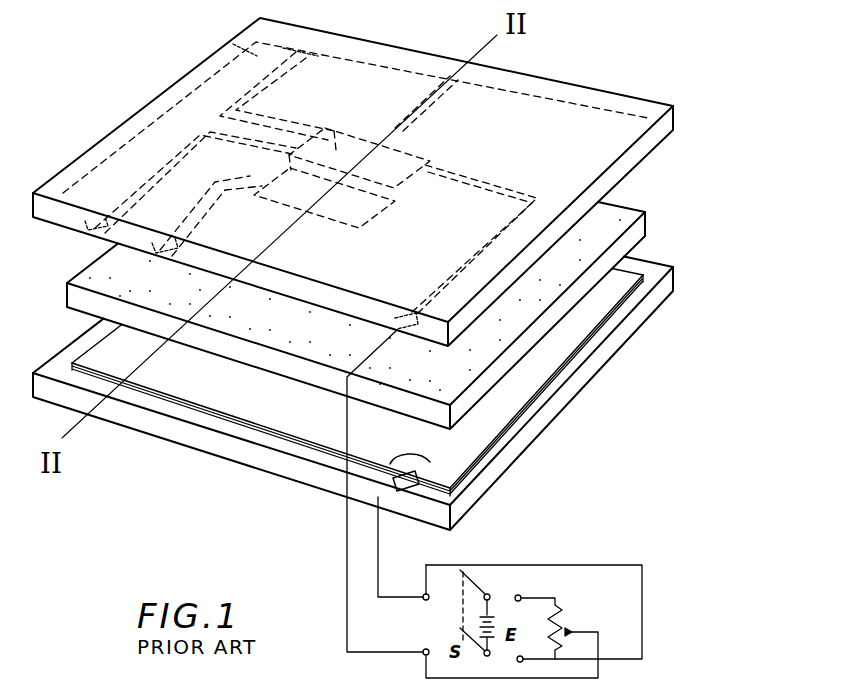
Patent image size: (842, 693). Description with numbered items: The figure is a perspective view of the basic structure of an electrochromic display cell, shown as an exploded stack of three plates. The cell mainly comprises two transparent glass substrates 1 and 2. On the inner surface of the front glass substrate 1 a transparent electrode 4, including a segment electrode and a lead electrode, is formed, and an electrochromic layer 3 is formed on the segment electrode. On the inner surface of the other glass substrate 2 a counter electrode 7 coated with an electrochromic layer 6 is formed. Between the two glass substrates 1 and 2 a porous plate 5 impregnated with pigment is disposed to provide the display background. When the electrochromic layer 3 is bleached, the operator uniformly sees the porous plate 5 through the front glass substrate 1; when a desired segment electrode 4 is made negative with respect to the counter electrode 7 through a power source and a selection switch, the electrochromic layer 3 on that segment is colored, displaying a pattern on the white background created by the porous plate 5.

The transparent glass substrate 1 is at (600, 100).
The transparent glass substrate 2 is at (657, 298).
The electrochromic layer 3 is at (410, 140).
The transparent electrode 4 is at (413, 107).
The porous plate 5 is at (607, 213).
The electrochromic layer 6 is at (618, 278).
The counter electrode 7 is at (433, 462).